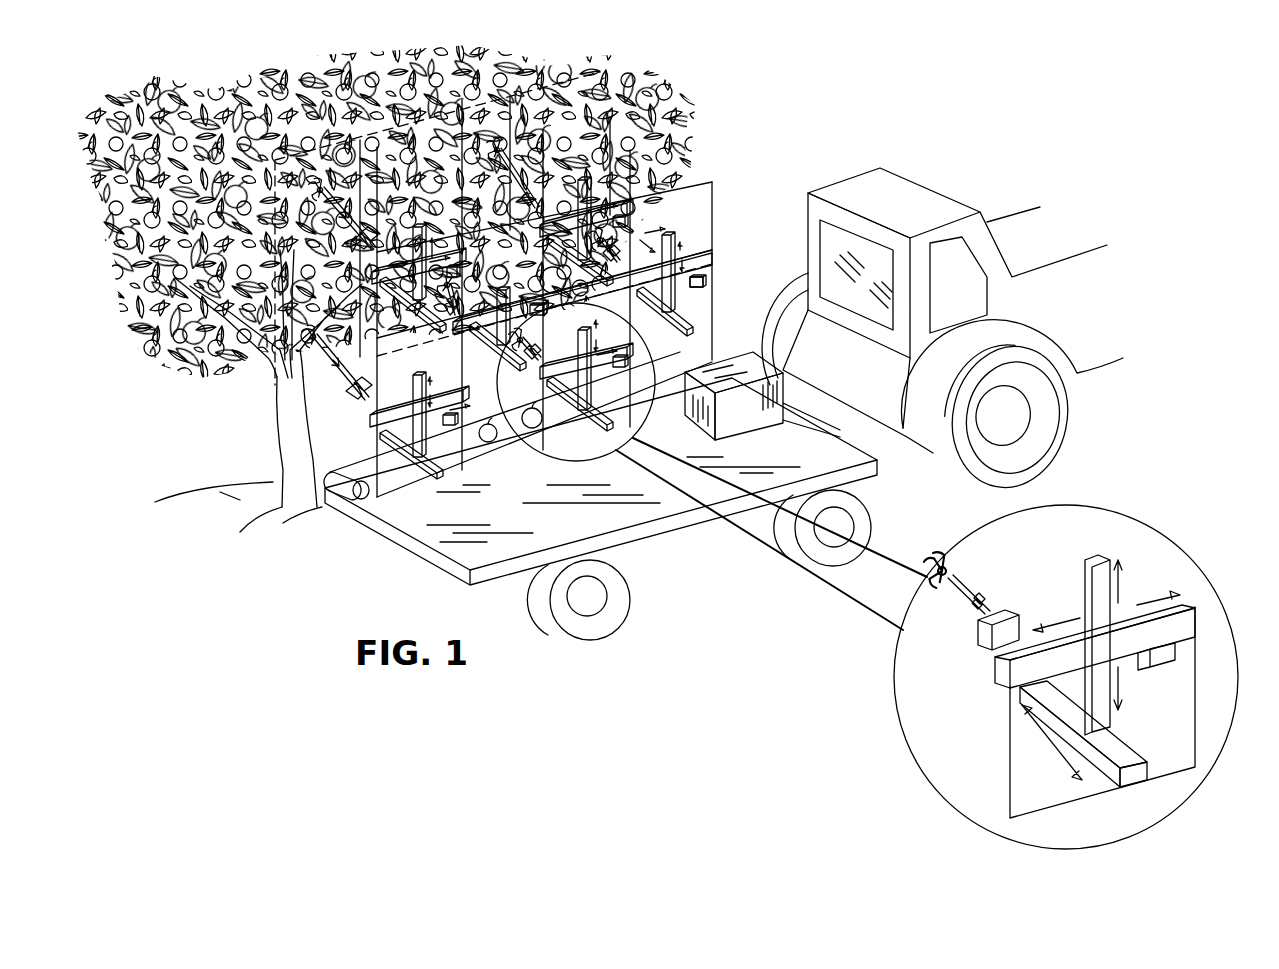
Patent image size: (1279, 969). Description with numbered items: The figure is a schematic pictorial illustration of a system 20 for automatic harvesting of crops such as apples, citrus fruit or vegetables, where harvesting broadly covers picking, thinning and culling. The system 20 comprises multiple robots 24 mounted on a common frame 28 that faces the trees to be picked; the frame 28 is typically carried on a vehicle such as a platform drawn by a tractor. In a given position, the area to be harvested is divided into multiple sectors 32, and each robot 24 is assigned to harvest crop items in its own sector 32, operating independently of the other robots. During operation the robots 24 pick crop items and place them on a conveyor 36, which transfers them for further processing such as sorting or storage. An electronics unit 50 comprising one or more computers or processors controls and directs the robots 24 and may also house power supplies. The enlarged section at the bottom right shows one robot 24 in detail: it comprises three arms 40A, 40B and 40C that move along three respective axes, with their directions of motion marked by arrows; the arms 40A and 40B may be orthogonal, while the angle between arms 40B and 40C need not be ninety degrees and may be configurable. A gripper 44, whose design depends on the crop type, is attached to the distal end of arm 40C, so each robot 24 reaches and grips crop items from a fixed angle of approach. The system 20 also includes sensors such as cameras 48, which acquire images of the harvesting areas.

The system 20 is at (742, 87).
The robot 24 is at (710, 253).
The frame 28 is at (693, 182).
The sector 32 is at (283, 400).
The conveyor 36 is at (347, 490).
The arm 40A is at (1197, 607).
The arm 40B is at (1093, 595).
The arm 40C is at (1127, 747).
The gripper 44 is at (968, 580).
The camera 48 is at (1143, 663).
The electronics unit 50 is at (732, 418).